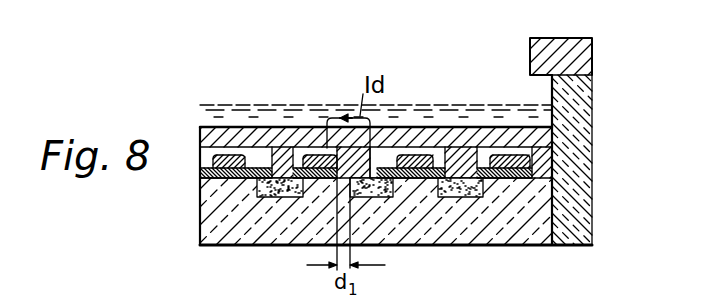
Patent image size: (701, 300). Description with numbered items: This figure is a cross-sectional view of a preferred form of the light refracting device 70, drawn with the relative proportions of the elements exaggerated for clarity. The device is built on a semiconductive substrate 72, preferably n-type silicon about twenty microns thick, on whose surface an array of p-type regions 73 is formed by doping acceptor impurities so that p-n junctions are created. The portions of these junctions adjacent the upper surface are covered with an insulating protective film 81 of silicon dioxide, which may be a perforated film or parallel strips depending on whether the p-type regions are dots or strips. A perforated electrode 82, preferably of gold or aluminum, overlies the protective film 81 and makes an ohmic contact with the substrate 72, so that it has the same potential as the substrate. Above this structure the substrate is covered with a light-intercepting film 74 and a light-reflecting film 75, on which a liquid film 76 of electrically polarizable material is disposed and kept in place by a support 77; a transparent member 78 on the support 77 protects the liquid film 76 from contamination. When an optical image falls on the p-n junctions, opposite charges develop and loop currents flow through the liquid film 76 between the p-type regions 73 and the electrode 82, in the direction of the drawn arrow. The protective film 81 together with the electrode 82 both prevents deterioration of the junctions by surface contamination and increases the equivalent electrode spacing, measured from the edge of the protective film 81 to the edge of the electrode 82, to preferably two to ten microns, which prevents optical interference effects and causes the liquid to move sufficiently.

The light refracting device 70 is at (380, 65).
The semiconductive substrate 72 is at (255, 247).
The p-type regions 73 is at (440, 197).
The light-intercepting film 74 is at (278, 146).
The light-reflecting film 75 is at (230, 140).
The liquid film 76 is at (421, 107).
The support 77 is at (585, 112).
The transparent member 78 is at (567, 38).
The insulating protective film 81 is at (262, 157).
The perforated electrode 82 is at (227, 158).